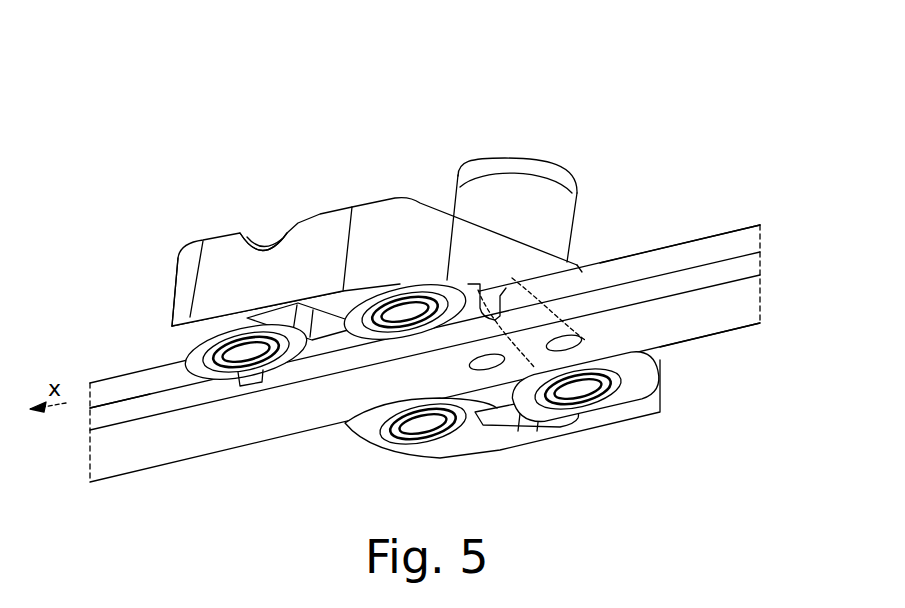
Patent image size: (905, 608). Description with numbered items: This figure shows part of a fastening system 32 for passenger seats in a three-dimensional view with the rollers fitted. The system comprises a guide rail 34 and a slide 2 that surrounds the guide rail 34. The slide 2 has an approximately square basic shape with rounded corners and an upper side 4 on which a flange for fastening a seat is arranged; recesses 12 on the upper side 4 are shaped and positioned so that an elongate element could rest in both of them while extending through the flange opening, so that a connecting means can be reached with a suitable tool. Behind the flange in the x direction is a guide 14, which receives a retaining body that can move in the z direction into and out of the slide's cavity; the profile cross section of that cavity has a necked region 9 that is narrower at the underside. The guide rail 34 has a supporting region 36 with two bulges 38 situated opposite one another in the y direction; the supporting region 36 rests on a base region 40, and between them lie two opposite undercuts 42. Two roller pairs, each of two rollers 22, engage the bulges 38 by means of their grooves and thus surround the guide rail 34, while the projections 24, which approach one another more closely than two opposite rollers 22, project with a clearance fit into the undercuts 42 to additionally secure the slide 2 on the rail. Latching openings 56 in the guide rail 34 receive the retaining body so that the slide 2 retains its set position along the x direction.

The slide 2 is at (213, 256).
The upper side 4 is at (372, 201).
The necked region 9 is at (478, 285).
The recesses 12 is at (272, 229).
The guide 14 is at (538, 190).
The rollers 22 is at (217, 333).
The projections 24 is at (350, 343).
The fastening system 32 is at (527, 95).
The guide rail 34 is at (747, 295).
The supporting region 36 is at (745, 242).
The bulges 38 is at (686, 242).
The base region 40 is at (715, 306).
The undercuts 42 is at (112, 405).
The latching opening 56 is at (490, 364).